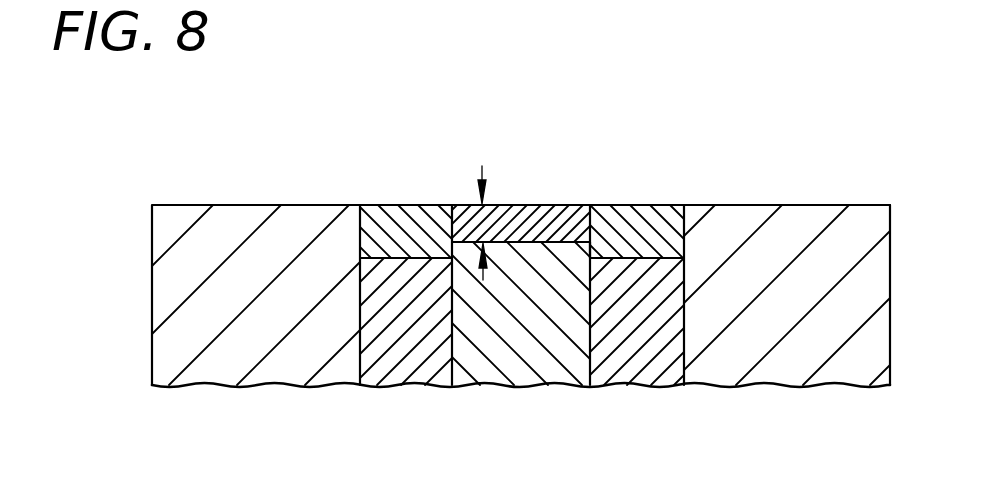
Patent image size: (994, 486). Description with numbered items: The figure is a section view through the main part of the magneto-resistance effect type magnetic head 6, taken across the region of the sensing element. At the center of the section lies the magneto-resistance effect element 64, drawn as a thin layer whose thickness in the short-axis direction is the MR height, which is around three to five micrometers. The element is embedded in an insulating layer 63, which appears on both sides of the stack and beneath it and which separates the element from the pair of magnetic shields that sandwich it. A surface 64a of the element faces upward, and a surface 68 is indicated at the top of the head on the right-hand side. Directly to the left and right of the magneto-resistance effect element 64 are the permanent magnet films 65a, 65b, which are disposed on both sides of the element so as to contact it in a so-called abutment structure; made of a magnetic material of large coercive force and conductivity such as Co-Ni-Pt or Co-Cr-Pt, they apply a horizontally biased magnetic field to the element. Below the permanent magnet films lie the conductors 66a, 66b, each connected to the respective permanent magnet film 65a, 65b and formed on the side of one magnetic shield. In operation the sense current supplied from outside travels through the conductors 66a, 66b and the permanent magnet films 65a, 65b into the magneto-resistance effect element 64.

The magneto-resistance effect type magnetic head 6 is at (787, 168).
The insulating layer 63 is at (227, 218).
The magneto-resistance effect element 64 is at (519, 178).
The upper surface of magnetic layer 64a is at (563, 217).
The permanent magnet film 65a is at (403, 217).
The permanent magnet film 65b is at (657, 216).
The conductor 66a is at (397, 387).
The conductor 66b is at (645, 387).
The upper surface 68 is at (745, 216).